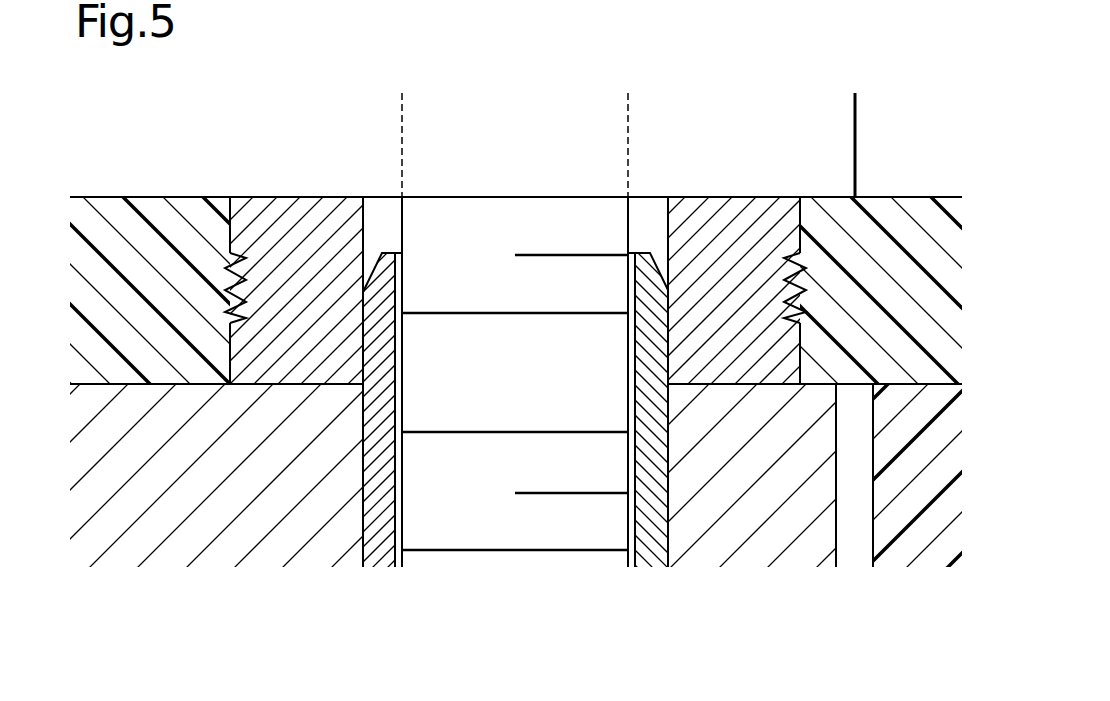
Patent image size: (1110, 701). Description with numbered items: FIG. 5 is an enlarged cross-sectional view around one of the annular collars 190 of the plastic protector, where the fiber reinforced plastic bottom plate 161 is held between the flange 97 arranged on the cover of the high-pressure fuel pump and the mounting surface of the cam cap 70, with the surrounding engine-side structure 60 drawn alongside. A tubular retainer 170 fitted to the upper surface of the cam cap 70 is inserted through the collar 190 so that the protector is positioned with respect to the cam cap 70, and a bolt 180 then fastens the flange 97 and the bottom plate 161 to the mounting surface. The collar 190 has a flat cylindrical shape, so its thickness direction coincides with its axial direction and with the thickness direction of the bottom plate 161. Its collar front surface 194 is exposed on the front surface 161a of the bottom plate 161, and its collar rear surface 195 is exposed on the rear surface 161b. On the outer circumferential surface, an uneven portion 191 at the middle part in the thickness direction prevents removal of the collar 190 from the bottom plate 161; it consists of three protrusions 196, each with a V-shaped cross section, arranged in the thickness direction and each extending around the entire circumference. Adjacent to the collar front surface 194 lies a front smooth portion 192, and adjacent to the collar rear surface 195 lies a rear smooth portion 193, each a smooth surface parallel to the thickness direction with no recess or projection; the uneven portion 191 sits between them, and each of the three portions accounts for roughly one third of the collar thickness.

The housing 60 is at (927, 563).
The cam cap 70 is at (218, 563).
The flange 97 is at (845, 152).
The bottom plate 161 is at (176, 197).
The front surface 161a is at (100, 197).
The rear surface 161b is at (93, 385).
The retainer 170 is at (649, 563).
The bolt 180 is at (403, 218).
The collar 190 is at (705, 198).
The uneven portion 191 is at (199, 297).
The front smooth portion 192 is at (232, 230).
The rear smooth portion 193 is at (230, 360).
The collar front surface 194 is at (780, 197).
The collar rear surface 195 is at (735, 385).
The protrusion 196 is at (802, 282).